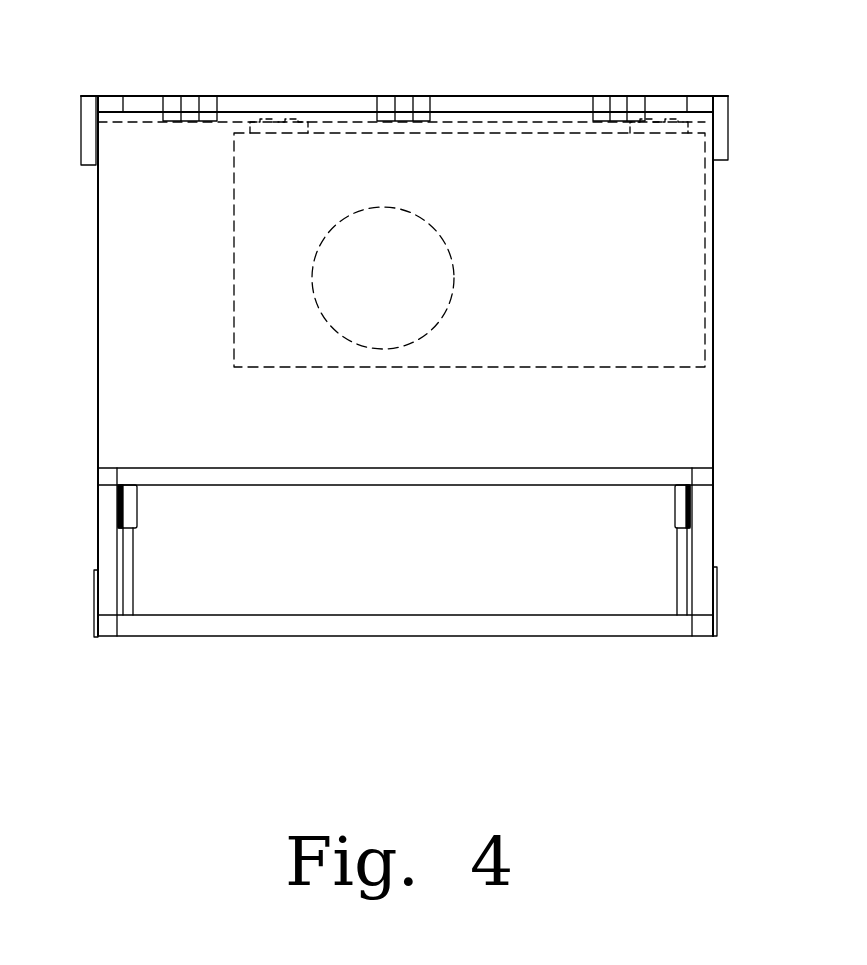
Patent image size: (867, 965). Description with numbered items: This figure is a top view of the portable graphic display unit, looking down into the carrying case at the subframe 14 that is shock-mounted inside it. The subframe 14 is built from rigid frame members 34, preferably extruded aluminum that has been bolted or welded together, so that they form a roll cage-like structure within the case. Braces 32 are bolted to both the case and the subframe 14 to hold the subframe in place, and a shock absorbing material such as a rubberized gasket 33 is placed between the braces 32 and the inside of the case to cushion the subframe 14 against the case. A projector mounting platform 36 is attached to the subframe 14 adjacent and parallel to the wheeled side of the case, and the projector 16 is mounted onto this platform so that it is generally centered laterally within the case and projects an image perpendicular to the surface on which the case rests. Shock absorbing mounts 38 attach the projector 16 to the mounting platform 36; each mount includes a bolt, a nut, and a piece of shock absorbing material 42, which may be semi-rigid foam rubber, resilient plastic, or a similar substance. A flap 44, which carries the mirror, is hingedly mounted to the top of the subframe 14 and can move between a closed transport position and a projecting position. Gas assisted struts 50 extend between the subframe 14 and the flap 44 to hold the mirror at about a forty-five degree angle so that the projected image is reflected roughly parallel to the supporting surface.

The subframe 14 is at (100, 543).
The projector 16 is at (643, 222).
The braces 32 is at (725, 137).
The rubberized gasket 33 is at (85, 97).
The frame members 34 is at (105, 505).
The projector mounting platform 36 is at (488, 113).
The shock absorbing mounts 38 is at (295, 118).
The shock absorbing material 42 is at (251, 113).
The flap 44 is at (267, 478).
The gas assisted struts 50 is at (132, 508).